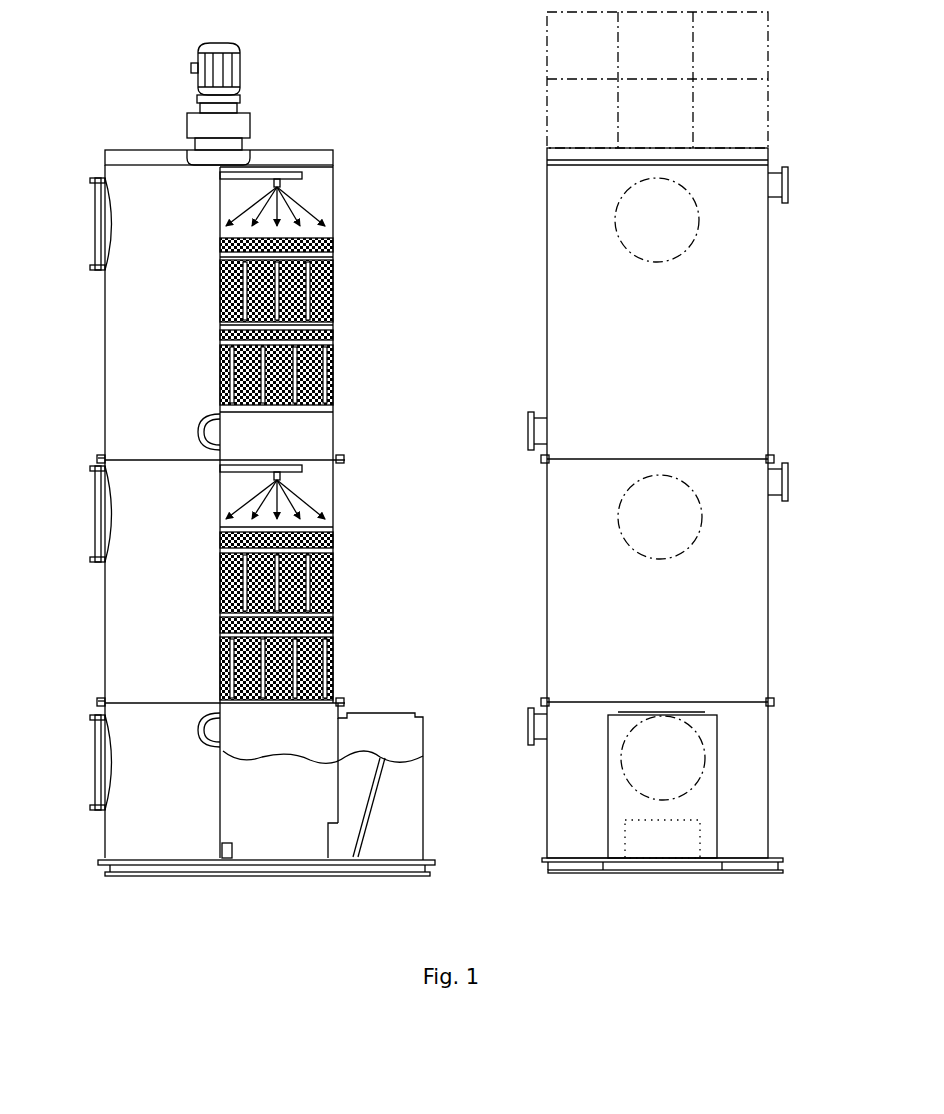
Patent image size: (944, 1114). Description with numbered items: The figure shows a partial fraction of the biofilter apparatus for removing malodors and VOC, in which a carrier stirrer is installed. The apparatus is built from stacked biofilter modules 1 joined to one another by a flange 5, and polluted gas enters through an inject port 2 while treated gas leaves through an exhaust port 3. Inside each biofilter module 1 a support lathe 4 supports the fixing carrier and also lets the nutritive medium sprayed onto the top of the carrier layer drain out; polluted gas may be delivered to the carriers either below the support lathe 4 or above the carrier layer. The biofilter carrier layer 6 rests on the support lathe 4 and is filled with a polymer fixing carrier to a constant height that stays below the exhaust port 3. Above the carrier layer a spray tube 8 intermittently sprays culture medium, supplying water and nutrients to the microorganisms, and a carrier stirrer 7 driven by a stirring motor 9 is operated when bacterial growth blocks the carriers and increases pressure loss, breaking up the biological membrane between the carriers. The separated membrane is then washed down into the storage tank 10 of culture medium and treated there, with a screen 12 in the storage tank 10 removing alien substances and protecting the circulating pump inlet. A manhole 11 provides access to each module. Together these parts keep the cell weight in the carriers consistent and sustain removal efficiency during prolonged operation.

The biofilter module 1 is at (105, 372).
The inject port of polluted gas 2 is at (207, 412).
The exhaust port of treated gas 3 is at (793, 183).
The support lathe of carriers 4 is at (335, 320).
The flange 5 is at (348, 458).
The biofilter carrier layer 6 is at (320, 285).
The carrier stirrer 7 is at (320, 249).
The spray tube 8 is at (288, 184).
The stirring motor 9 is at (241, 55).
The storage tank of nutrients and medium 10 is at (398, 790).
The manhole 11 is at (92, 225).
The screen 12 is at (368, 833).